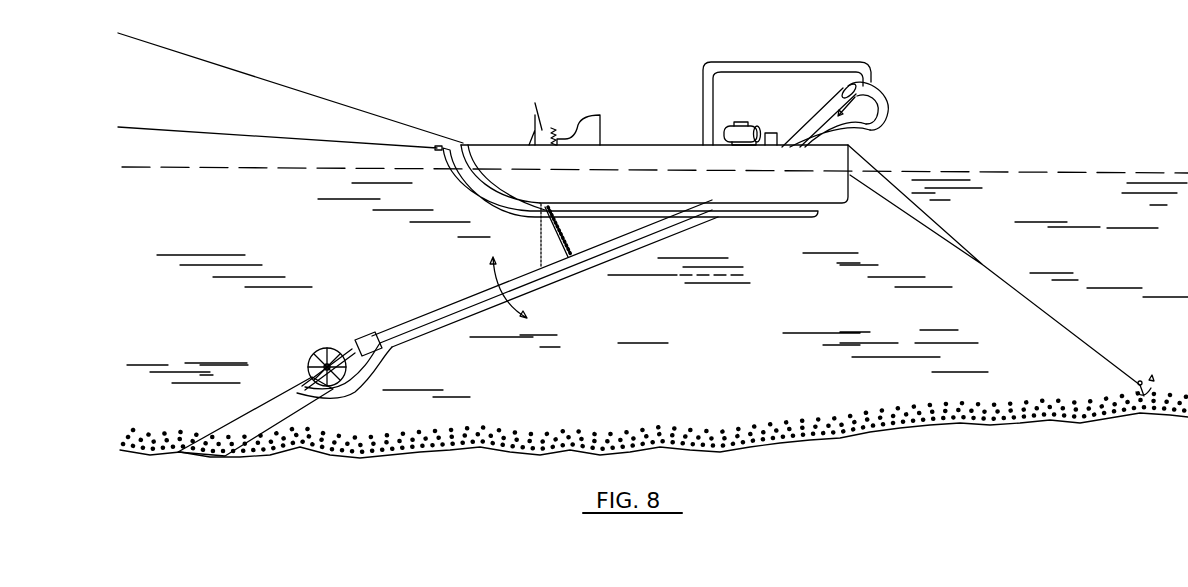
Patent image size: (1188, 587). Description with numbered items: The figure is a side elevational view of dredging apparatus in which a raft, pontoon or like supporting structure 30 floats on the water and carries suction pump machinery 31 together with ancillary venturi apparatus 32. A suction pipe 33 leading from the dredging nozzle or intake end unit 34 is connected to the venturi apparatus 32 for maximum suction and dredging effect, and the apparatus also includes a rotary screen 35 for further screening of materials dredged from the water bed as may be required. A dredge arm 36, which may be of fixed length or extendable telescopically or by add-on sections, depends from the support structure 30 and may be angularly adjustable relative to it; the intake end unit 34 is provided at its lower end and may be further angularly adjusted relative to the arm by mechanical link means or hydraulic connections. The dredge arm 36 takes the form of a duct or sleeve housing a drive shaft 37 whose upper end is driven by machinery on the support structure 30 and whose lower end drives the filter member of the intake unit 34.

The supporting structure 30 is at (627, 140).
The suction pump machinery 31 is at (753, 115).
The ancillary venturi apparatus 32 is at (884, 79).
The suction pipe 33 is at (877, 131).
The intake end unit 34 is at (232, 458).
The rotary screen 35 is at (870, 101).
The dredge arm 36 is at (432, 316).
The drive shaft 37 is at (342, 398).